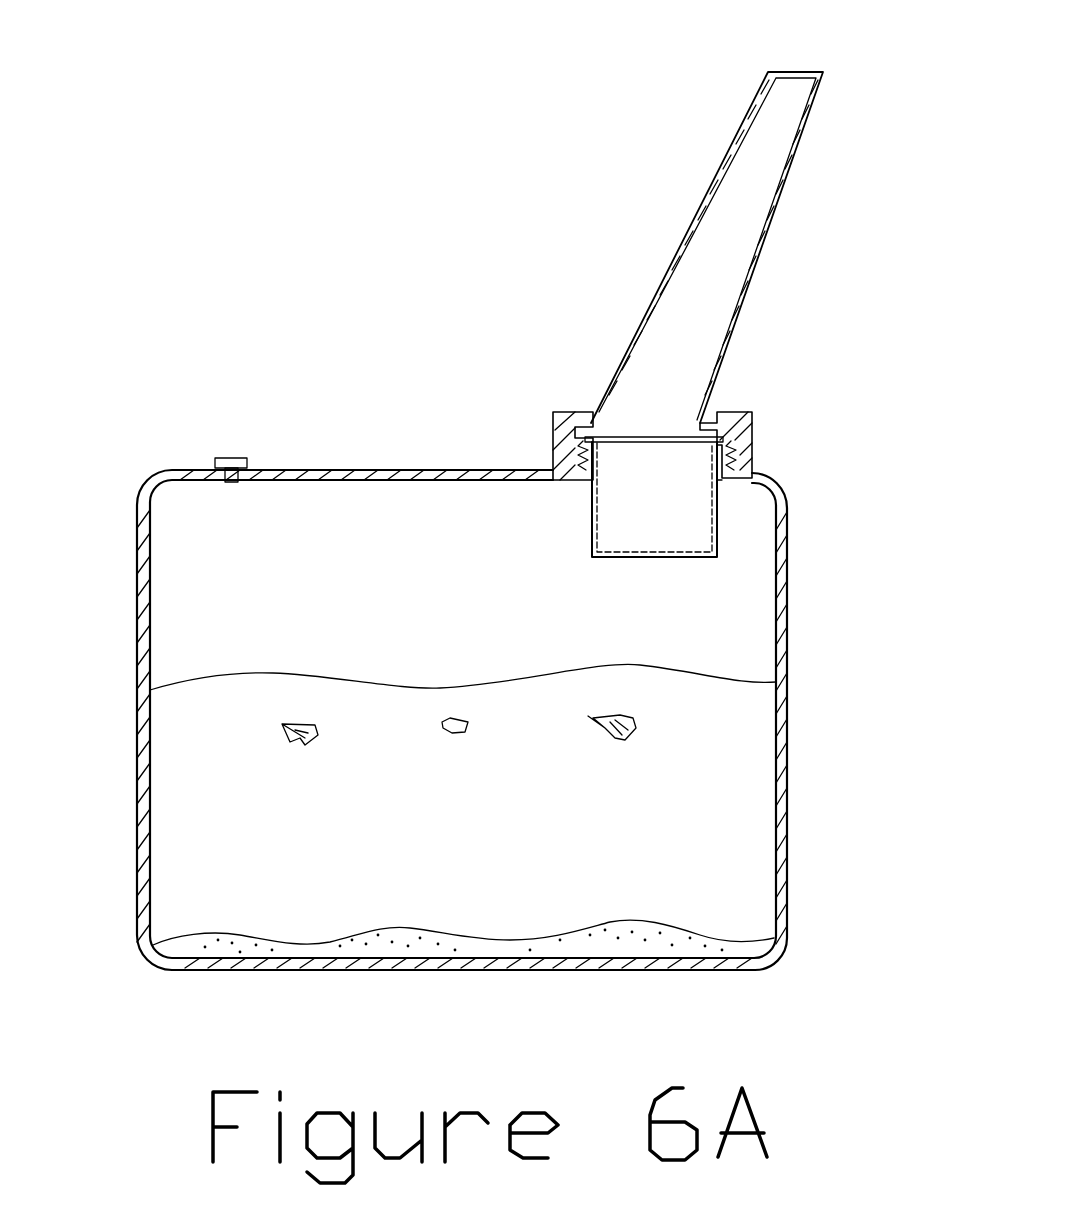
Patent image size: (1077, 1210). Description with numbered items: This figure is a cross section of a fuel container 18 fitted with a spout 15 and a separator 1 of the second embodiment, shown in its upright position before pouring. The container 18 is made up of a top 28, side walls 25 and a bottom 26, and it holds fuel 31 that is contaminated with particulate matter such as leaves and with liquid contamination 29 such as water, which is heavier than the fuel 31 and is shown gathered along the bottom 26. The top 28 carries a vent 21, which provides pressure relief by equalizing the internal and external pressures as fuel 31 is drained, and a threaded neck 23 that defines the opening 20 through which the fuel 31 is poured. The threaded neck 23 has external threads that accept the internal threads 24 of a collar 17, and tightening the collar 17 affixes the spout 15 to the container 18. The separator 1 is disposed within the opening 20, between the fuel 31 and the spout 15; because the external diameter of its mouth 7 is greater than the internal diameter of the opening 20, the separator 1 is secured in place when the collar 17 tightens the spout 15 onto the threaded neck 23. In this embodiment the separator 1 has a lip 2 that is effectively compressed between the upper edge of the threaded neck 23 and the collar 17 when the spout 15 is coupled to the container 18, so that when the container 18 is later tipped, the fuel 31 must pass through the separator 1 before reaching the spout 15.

The separator 1 is at (660, 516).
The lip 2 is at (593, 437).
The mouth 7 is at (290, 740).
The spout 15 is at (663, 282).
The collar 17 is at (560, 440).
The fuel container 18 is at (491, 625).
The opening 20 is at (720, 480).
The vent 21 is at (234, 460).
The threaded neck 23 is at (740, 452).
The internal threads 24 is at (578, 470).
The side walls 25 is at (786, 712).
The bottom 26 is at (237, 970).
The top 28 is at (396, 470).
The liquid contamination 29 is at (680, 945).
The fuel 31 is at (458, 851).